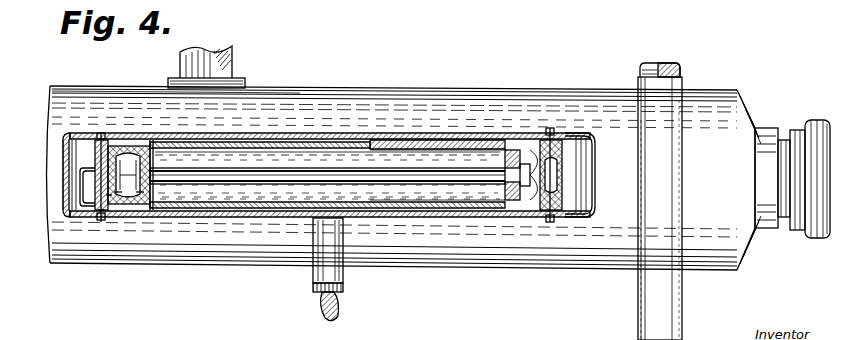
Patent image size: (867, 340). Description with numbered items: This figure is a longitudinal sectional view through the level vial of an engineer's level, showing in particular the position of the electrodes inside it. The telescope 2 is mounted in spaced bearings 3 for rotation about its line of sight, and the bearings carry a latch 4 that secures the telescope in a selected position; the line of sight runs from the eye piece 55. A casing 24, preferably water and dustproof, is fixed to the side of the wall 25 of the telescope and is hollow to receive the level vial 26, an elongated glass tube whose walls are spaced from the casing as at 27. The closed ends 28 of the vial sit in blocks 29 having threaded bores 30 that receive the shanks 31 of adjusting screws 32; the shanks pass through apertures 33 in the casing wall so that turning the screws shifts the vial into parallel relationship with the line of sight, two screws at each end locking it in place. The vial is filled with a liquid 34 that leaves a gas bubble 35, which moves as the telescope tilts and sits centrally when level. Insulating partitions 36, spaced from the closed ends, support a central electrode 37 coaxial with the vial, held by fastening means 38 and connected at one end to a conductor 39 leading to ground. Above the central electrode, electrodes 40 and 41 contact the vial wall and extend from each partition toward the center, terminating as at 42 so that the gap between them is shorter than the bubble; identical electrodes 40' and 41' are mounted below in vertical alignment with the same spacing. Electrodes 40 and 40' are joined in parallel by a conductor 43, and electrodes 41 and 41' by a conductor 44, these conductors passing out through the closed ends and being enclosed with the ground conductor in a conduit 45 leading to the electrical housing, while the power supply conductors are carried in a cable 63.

The telescope 2 is at (386, 78).
The spaced bearings 3 is at (672, 74).
The latch 4 is at (640, 70).
The casing 24 is at (285, 152).
The wall of the telescope 25 is at (127, 108).
The level vial 26 is at (228, 148).
The spacing 27 is at (185, 155).
The closed ends 28 is at (150, 147).
The blocks 29 is at (95, 150).
The threaded bores 30 is at (96, 160).
The shanks 31 is at (122, 147).
The adjusting screws 32 is at (100, 132).
The apertures 33 is at (88, 128).
The liquid 34 is at (291, 163).
The gas bubble 35 is at (330, 152).
The partitions 36 is at (140, 195).
The electrode 37 is at (230, 183).
The fastening means 38 is at (118, 195).
The conductor 39 is at (110, 200).
The electrode 40 is at (196, 96).
The electrode 40' is at (330, 250).
The electrode 41 is at (437, 107).
The electrode 41' is at (437, 247).
The electrode ends 42 is at (370, 148).
The conductor 43 is at (100, 200).
The conductor 44 is at (578, 200).
The conduit 45 is at (345, 275).
The eye piece 55 is at (828, 130).
The cable 63 is at (325, 300).